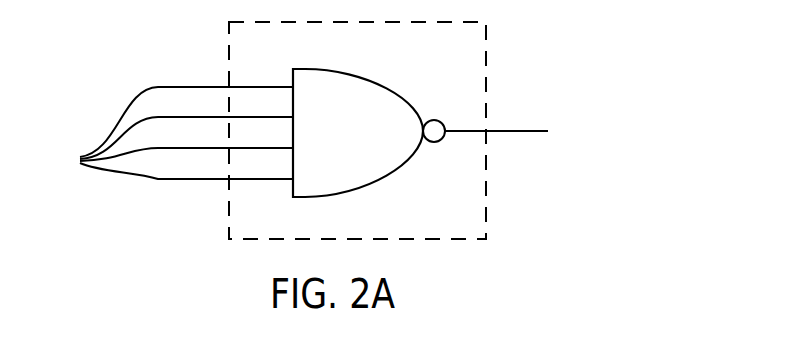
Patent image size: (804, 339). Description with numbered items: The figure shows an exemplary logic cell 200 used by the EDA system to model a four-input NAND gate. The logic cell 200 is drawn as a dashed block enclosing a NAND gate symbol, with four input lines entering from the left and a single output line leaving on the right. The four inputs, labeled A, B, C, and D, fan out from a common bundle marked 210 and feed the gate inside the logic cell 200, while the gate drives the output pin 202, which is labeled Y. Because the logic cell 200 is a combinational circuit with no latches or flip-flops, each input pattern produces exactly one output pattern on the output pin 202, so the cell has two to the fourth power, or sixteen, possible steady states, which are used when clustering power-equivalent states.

The logic cell 200 is at (485, 22).
The output pin 202 is at (548, 131).
The inputs A, B, C, D 210 is at (165, 121).